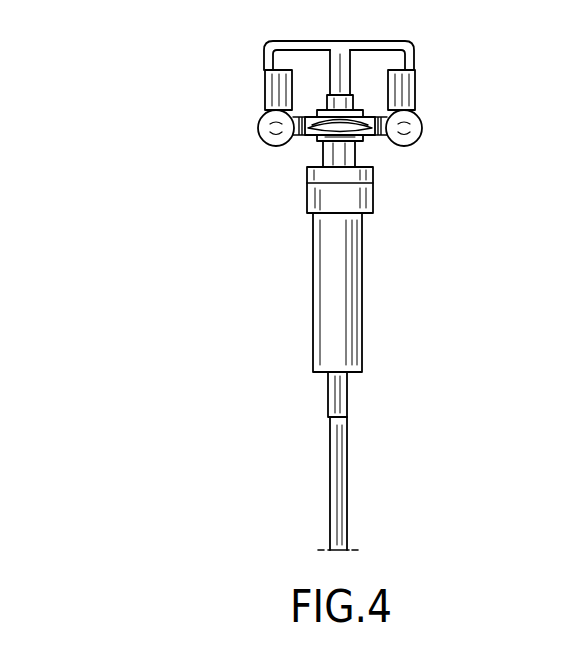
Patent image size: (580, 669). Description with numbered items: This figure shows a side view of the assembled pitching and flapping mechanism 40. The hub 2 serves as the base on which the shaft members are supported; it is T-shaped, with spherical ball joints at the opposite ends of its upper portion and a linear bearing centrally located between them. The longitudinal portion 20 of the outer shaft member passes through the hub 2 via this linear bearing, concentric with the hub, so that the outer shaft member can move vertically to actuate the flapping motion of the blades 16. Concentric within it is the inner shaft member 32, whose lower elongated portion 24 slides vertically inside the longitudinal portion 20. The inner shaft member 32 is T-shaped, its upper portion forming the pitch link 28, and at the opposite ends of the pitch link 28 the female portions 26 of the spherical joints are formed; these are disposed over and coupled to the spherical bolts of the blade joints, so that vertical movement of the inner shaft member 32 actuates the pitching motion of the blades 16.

The pitching and flapping mechanism 40 is at (182, 135).
The pitch link 28 is at (388, 42).
The inner shaft member 32 is at (330, 80).
The female portions of the spherical joints 26 is at (422, 124).
The blades 16 is at (363, 140).
The hub 2 is at (355, 304).
The longitudinal portion of the outer shaft member 20 is at (350, 403).
The lower elongated portion of the inner shaft member 24 is at (350, 490).